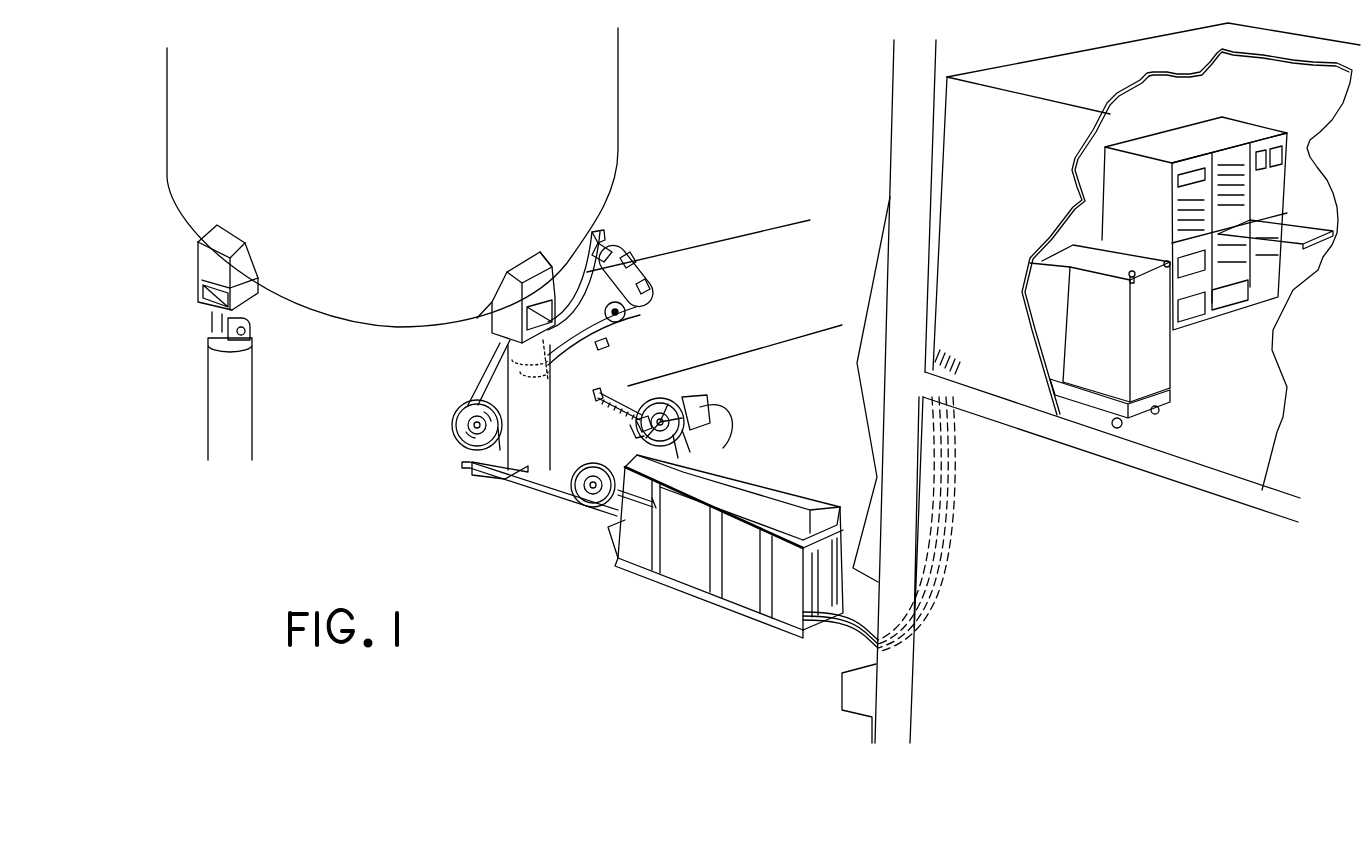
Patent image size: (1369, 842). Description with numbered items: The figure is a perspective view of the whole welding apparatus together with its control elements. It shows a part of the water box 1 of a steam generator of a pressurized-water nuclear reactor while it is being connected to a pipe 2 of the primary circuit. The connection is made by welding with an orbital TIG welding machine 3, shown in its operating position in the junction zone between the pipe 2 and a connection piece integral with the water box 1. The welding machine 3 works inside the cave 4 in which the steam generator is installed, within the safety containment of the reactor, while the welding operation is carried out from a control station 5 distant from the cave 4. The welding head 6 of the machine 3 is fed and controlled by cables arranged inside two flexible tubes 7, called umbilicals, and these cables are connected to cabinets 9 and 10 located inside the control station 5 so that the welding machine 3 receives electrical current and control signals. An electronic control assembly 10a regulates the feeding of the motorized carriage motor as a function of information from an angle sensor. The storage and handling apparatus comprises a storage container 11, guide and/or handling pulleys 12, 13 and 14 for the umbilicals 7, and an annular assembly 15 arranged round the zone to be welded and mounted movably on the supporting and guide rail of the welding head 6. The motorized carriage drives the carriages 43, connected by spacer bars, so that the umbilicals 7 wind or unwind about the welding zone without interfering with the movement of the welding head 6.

The water box 1 is at (603, 165).
The pipe 2 is at (712, 258).
The orbital TIG welding machine 3 is at (626, 248).
The cave 4 is at (796, 408).
The control station 5 is at (1225, 406).
The welding head 6 is at (649, 316).
The flexible tubes 7 is at (471, 401).
The cabinet 9 is at (1153, 372).
The cabinet 10 is at (1207, 123).
The electronic control assembly 10a is at (1221, 298).
The storage container 11 is at (738, 602).
The guide and/or handling pulley 12 is at (668, 398).
The guide and/or handling pulley 13 is at (578, 512).
The guide and/or handling pulley 14 is at (453, 431).
The annular assembly 15 is at (616, 344).
The carriages 43 is at (557, 382).